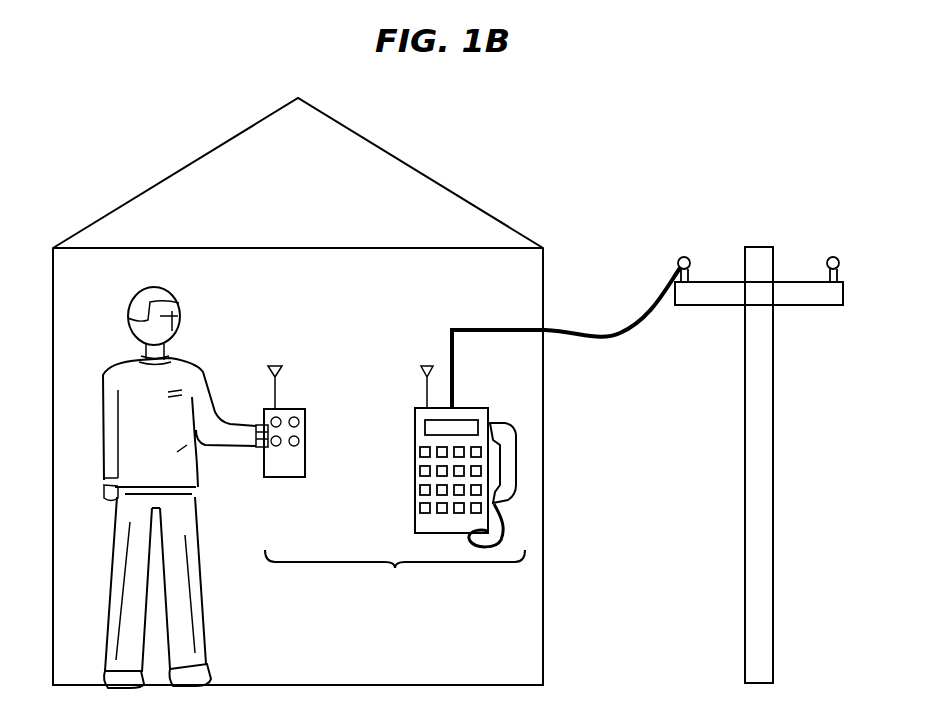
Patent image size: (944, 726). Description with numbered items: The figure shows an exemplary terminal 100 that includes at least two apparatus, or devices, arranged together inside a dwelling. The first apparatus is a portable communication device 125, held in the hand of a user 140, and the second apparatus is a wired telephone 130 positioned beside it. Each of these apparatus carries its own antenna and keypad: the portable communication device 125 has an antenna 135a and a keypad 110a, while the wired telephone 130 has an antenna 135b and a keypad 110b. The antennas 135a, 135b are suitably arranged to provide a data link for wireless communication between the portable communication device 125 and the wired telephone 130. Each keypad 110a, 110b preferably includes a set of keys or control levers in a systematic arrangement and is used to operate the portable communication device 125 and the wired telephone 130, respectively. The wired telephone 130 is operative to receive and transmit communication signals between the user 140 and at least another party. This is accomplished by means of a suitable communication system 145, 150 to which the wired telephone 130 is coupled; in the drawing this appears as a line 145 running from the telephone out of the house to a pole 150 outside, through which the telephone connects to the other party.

The terminal 100 is at (395, 575).
The keypad 110a is at (287, 457).
The keypad 110b is at (420, 474).
The portable communication device 125 is at (307, 434).
The wired telephone 130 is at (416, 413).
The antenna 135a is at (278, 392).
The antenna 135b is at (418, 382).
The user 140 is at (142, 289).
The communication system 145 is at (479, 330).
The communication system 150 is at (743, 420).